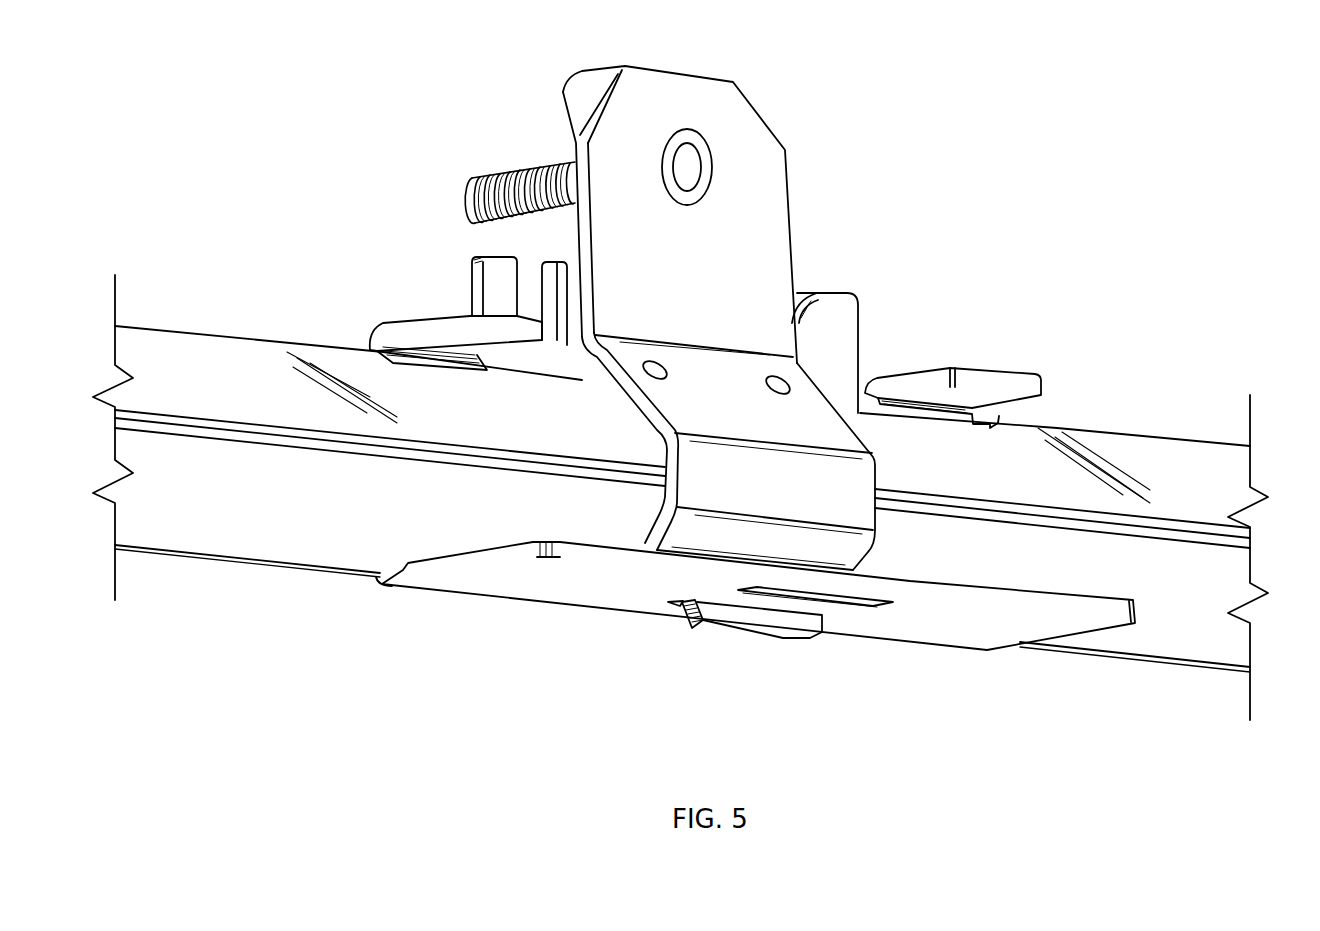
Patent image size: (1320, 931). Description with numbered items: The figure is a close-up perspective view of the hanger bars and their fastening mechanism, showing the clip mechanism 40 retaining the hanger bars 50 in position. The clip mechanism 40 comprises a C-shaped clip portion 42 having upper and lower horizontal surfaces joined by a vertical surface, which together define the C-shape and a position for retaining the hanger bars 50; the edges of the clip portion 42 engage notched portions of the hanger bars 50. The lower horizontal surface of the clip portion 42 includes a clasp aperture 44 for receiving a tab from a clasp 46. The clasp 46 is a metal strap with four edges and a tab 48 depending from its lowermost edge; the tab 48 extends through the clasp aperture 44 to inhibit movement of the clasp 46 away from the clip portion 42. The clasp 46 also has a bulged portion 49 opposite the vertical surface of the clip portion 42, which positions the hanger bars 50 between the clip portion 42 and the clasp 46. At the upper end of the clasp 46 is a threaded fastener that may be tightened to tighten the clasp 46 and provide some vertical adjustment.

The clip mechanism 40 is at (953, 190).
The C-shaped clip portion 42 is at (443, 323).
The clasp aperture 44 is at (684, 612).
The clasp 46 is at (737, 107).
The tab 48 is at (787, 625).
The bulged portion 49 is at (827, 487).
The hanger bars 50 is at (1146, 418).